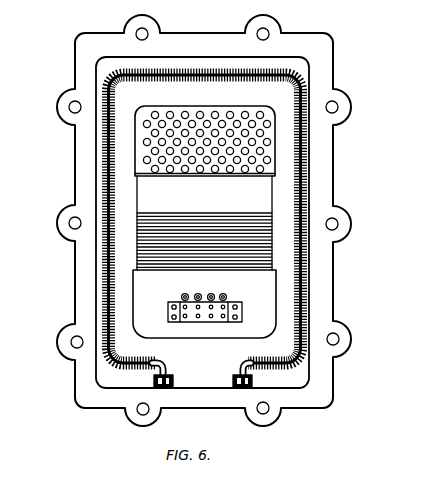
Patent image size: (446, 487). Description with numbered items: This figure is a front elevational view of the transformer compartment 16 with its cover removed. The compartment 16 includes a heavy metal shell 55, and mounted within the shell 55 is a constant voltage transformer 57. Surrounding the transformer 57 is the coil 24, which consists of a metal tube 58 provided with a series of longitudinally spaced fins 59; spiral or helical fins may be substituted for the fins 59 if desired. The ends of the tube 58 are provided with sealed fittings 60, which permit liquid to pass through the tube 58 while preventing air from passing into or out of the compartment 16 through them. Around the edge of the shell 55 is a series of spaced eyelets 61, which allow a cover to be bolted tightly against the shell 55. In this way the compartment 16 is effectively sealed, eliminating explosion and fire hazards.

The compartment 16 is at (339, 154).
The coil 24 is at (294, 289).
The heavy metal shell 55 is at (323, 66).
The constant voltage transformer 57 is at (202, 332).
The metal tube 58 is at (247, 358).
The fins 59 is at (145, 358).
The sealed fittings 60 is at (232, 380).
The eyelets 61 is at (74, 224).